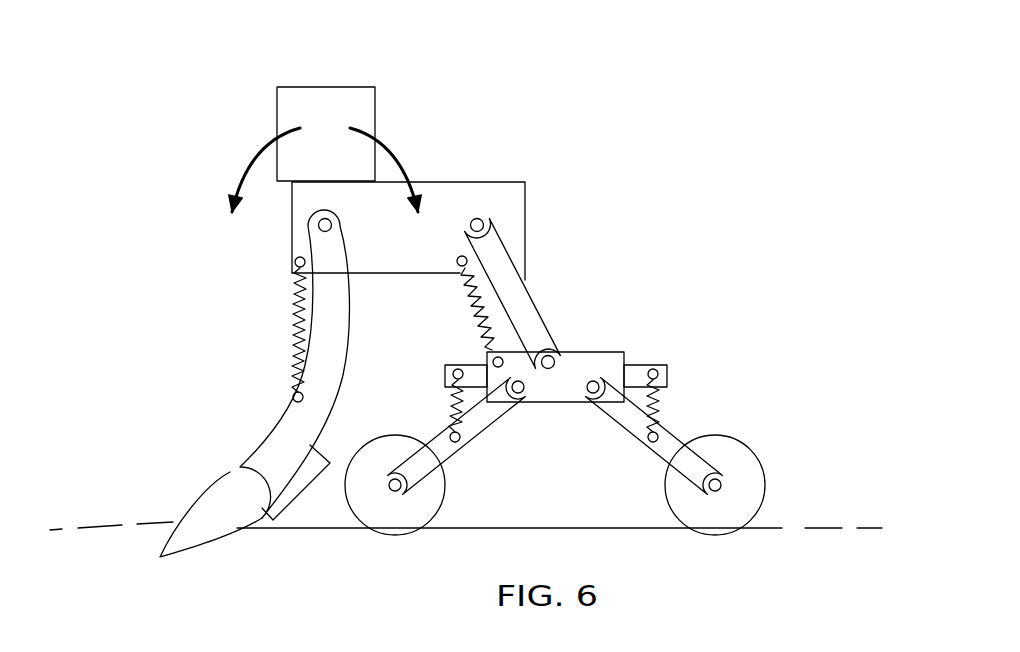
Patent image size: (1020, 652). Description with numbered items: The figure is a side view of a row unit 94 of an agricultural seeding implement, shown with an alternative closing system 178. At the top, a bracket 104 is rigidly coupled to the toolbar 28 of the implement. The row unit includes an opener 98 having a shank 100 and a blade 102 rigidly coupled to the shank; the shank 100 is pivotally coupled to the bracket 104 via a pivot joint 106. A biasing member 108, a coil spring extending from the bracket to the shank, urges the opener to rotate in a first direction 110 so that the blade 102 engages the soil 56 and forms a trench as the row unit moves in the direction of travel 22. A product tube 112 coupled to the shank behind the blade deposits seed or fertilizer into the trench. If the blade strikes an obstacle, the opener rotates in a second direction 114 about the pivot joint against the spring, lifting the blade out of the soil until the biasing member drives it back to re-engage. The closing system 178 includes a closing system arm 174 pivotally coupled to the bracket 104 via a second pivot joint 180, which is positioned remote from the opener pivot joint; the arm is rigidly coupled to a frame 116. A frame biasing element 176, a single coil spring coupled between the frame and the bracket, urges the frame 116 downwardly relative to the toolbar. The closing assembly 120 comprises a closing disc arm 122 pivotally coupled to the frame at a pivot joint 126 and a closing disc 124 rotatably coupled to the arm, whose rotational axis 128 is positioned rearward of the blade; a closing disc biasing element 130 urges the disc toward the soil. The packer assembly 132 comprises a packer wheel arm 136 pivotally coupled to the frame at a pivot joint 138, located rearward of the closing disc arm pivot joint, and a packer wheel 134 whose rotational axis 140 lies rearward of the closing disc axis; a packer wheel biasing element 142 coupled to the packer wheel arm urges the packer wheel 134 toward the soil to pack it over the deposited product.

The direction of travel 22 is at (128, 236).
The toolbar 28 is at (375, 108).
The soil 56 is at (623, 524).
The row unit 94 is at (217, 118).
The opener 98 is at (230, 430).
The shank 100 is at (230, 402).
The blade 102 is at (203, 497).
The bracket 104 is at (525, 207).
The pivot joint 106 is at (319, 231).
The biasing member 108 is at (298, 347).
The first direction 110 is at (393, 154).
The product tube 112 is at (268, 520).
The second direction 114 is at (262, 152).
The frame 116 is at (592, 350).
The closing assembly 120 is at (462, 485).
The closing disc arm 122 is at (440, 433).
The closing disc 124 is at (402, 530).
The pivot joint 126 is at (515, 394).
The rotational axis 128 is at (385, 497).
The closing disc biasing element 130 is at (440, 430).
The packer assembly 132 is at (707, 415).
The packer wheel 134 is at (748, 455).
The packer wheel arm 136 is at (632, 437).
The pivot joint 138 is at (597, 405).
The rotational axis 140 is at (730, 492).
The packer wheel biasing element 142 is at (665, 397).
The closing system arm 174 is at (540, 251).
The frame biasing element 176 is at (467, 292).
The closing system 178 is at (655, 246).
The second pivot joint 180 is at (486, 218).